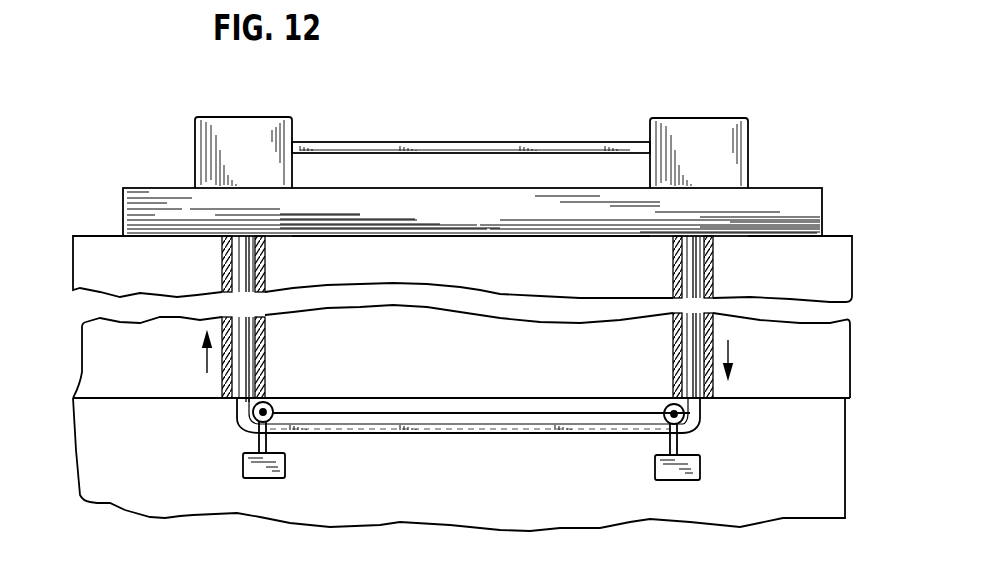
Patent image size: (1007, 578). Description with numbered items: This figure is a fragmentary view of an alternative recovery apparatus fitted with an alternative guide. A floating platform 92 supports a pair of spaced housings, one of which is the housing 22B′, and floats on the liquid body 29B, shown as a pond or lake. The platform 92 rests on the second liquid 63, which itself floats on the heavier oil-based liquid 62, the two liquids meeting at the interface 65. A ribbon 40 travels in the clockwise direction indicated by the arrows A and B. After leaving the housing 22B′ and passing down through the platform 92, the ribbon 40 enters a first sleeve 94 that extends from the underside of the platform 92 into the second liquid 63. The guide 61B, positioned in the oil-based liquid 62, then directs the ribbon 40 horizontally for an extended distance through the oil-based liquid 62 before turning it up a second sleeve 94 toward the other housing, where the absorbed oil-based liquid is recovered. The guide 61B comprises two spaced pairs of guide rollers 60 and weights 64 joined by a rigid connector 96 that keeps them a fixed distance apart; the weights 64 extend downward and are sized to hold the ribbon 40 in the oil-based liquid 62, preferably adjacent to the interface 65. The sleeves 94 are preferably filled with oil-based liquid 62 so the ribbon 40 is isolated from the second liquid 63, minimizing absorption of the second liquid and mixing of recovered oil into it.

The ribbon 40 is at (460, 142).
The housing 22B′ is at (748, 140).
The floating platform 92 is at (822, 189).
The sleeve 94 is at (222, 263).
The liquid body 29B is at (864, 333).
The second liquid 63 is at (813, 367).
The interface 65 is at (810, 395).
The oil-based liquid 62 is at (820, 470).
The rigid connector 96 is at (475, 413).
The guide rollers 60 is at (275, 418).
The weights 64 is at (285, 470).
The guide 61B is at (236, 452).
The arrow A is at (728, 352).
The arrow B is at (207, 372).